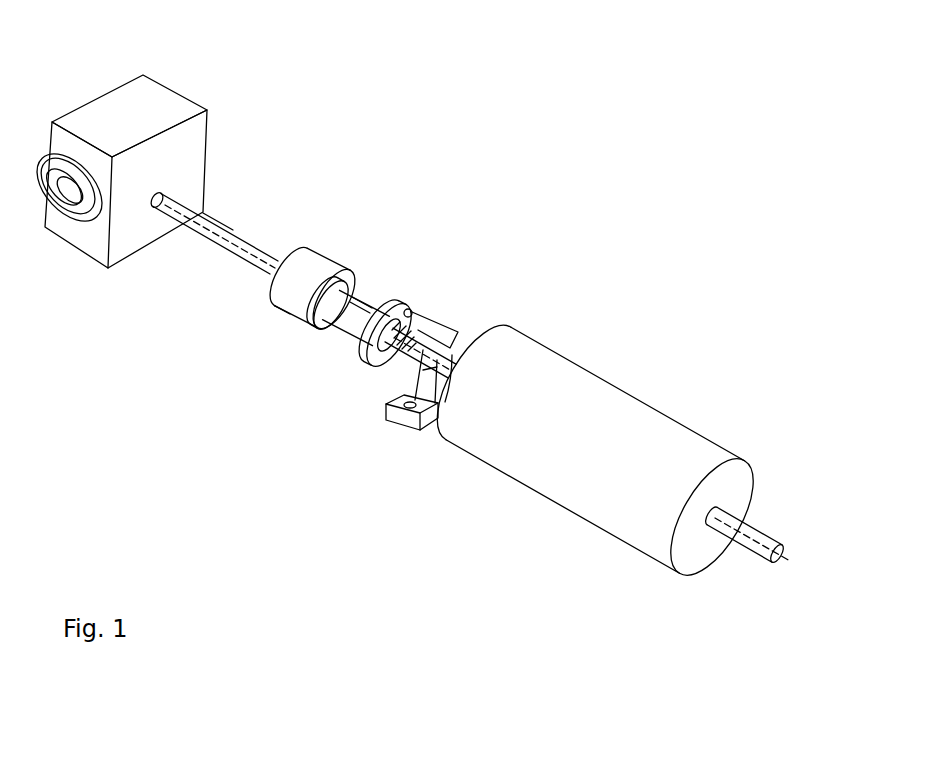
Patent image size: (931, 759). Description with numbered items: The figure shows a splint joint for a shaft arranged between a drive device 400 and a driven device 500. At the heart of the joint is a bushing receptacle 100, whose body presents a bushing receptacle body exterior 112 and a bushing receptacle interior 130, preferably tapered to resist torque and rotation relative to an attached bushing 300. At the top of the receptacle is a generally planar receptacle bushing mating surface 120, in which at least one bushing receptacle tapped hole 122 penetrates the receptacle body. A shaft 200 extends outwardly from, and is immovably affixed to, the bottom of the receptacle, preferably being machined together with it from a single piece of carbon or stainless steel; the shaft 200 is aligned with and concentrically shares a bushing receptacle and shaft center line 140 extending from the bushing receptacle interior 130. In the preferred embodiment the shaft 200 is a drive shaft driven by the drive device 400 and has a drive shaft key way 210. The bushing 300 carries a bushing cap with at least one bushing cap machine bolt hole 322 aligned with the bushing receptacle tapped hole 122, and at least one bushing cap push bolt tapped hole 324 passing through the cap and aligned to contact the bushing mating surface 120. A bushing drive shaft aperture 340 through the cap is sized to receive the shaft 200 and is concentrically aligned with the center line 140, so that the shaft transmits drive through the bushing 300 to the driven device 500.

The bushing receptacle 100 is at (422, 188).
The bushing receptacle body exterior 112 is at (280, 300).
The receptacle bushing mating surface 120 is at (322, 305).
The bushing receptacle tapped hole 122 is at (352, 272).
The bushing receptacle interior 130 is at (320, 333).
The bushing receptacle and shaft center line 140 is at (177, 220).
The shaft 200 is at (203, 213).
The drive shaft key way 210 is at (230, 233).
The bushing 300 is at (370, 482).
The bushing cap machine bolt hole 322 is at (393, 360).
The bushing cap push bolt tapped hole 324 is at (400, 305).
The bushing drive shaft aperture 340 is at (417, 322).
The drive device 400 is at (128, 122).
The driven device 500 is at (613, 408).